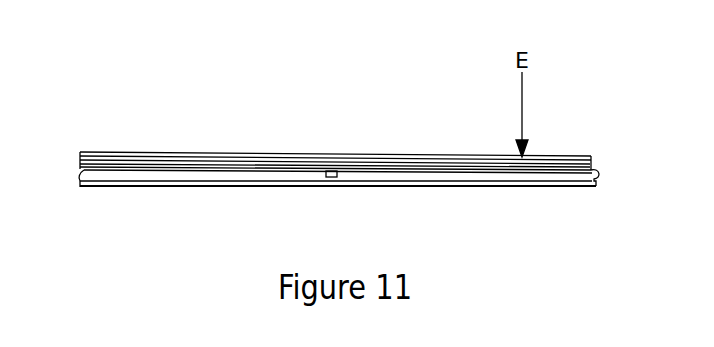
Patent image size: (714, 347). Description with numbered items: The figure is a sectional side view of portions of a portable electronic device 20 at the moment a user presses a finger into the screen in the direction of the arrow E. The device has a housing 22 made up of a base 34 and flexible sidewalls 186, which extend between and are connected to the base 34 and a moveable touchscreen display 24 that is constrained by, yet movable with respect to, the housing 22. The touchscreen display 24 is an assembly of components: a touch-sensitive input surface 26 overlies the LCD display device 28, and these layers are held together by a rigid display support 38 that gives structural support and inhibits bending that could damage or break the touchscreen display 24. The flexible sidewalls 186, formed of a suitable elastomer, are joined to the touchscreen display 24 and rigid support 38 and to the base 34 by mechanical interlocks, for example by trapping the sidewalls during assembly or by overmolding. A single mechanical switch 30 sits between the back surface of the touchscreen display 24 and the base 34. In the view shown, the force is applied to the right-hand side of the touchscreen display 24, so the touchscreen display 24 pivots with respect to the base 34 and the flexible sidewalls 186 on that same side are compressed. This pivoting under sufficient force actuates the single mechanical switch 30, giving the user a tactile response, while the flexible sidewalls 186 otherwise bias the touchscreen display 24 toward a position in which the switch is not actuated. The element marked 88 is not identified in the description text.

The portable electronic device 20 is at (574, 88).
The housing 22 is at (594, 186).
The touchscreen display 24 is at (157, 154).
The touch-sensitive input surface 26 is at (395, 158).
The display device 28 is at (325, 164).
The single mechanical switch 30 is at (333, 177).
The base 34 is at (503, 183).
The rigid display support 38 is at (214, 166).
The left end edge 88 is at (85, 152).
The flexible sidewalls 186 is at (601, 158).